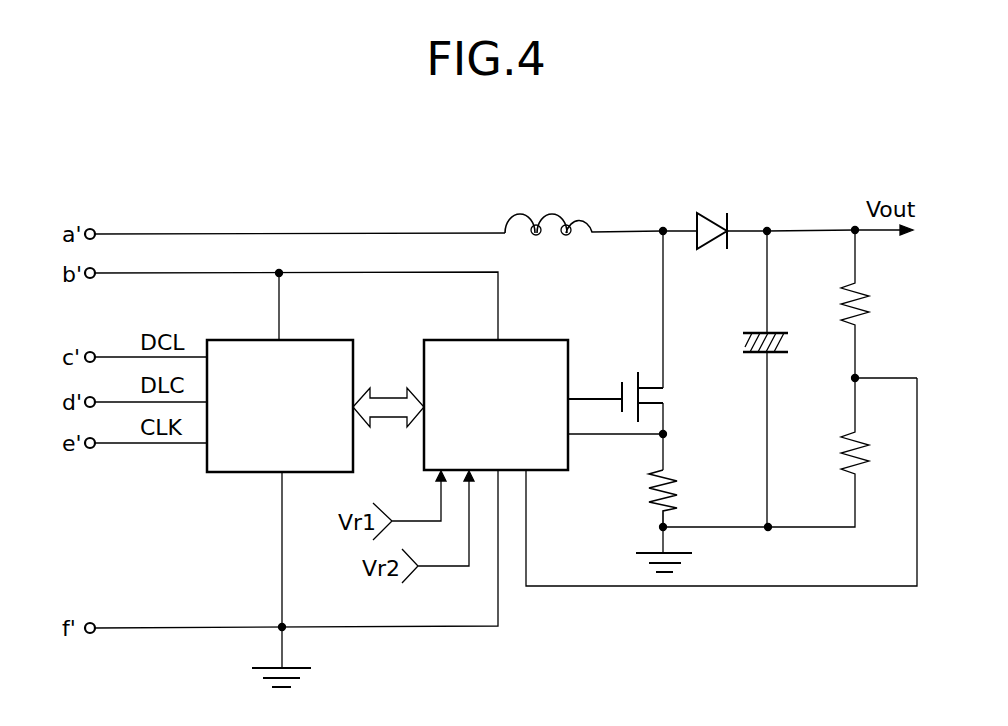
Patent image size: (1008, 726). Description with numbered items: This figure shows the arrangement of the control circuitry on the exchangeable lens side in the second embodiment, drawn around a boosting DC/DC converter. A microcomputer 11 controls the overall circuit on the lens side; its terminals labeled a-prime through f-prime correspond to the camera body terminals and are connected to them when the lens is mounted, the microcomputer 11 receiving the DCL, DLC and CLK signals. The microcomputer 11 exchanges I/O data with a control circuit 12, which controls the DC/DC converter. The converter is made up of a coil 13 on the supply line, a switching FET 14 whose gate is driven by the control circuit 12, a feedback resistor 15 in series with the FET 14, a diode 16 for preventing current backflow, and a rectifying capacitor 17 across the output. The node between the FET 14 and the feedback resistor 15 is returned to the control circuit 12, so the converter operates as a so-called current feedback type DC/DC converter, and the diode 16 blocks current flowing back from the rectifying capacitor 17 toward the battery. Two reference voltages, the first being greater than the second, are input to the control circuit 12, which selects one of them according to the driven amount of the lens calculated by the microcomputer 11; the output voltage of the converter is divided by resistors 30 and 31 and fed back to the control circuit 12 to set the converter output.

The microcomputer 11 is at (238, 339).
The control circuit 12 is at (457, 339).
The coil 13 is at (588, 213).
The switching FET 14 is at (635, 377).
The feedback resistor 15 is at (678, 481).
The diode 16 is at (710, 212).
The rectifying capacitor 17 is at (778, 332).
The resistor 30 is at (868, 293).
The resistor 31 is at (845, 460).